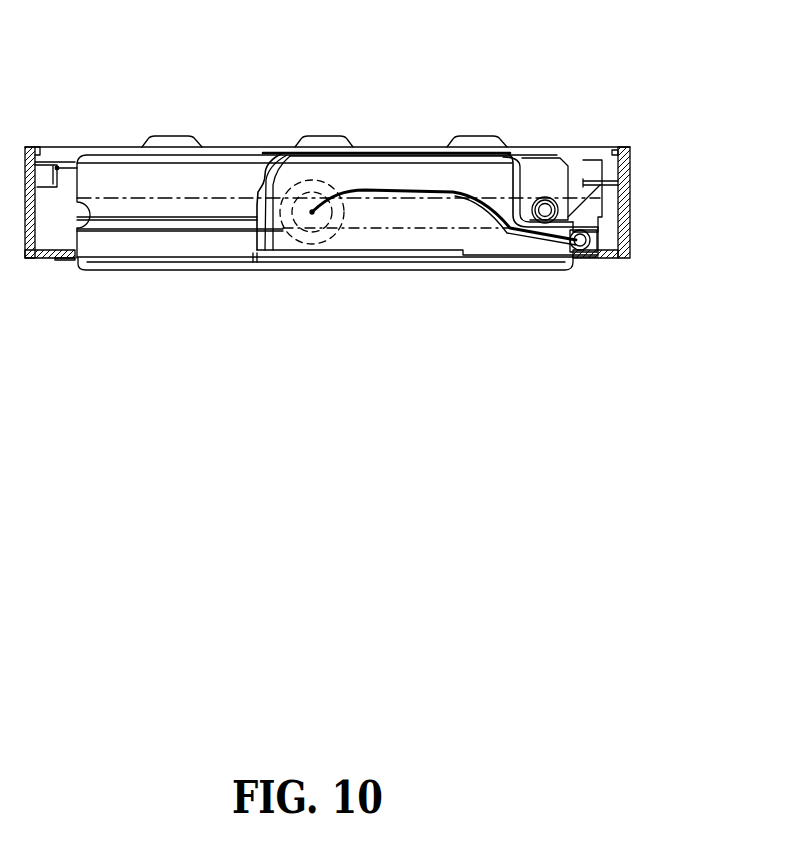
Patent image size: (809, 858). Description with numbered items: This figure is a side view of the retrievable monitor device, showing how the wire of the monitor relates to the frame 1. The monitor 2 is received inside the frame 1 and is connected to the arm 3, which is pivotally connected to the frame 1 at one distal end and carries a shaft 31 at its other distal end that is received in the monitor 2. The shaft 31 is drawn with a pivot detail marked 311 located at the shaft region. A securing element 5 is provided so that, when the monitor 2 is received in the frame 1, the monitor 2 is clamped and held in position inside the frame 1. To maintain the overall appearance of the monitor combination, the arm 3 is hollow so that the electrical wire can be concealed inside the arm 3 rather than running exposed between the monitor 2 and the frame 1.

The frame 1 is at (647, 195).
The monitor 2 is at (117, 178).
The arm 3 is at (483, 175).
The shaft 31 is at (328, 182).
The pivot pin 311 is at (296, 181).
The securing element 5 is at (427, 190).